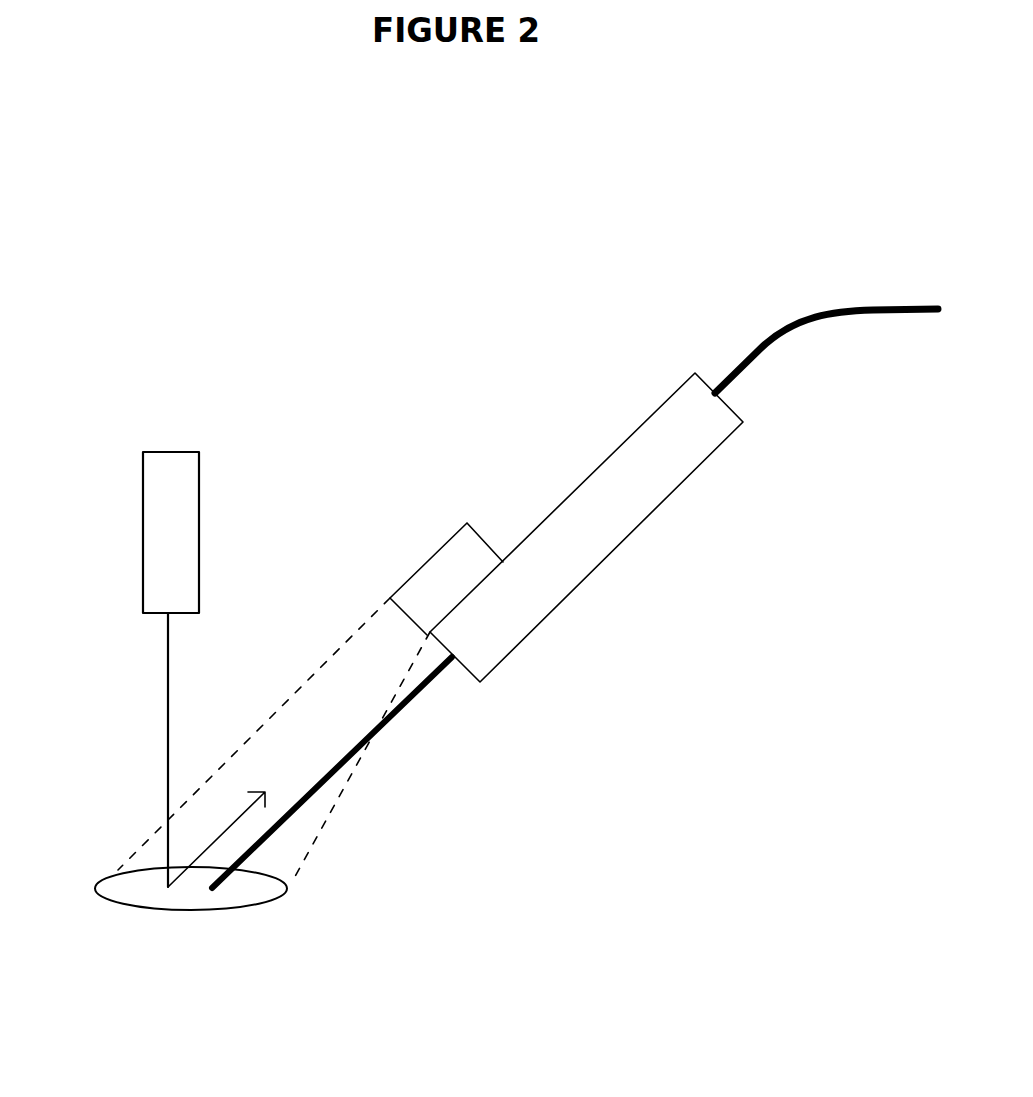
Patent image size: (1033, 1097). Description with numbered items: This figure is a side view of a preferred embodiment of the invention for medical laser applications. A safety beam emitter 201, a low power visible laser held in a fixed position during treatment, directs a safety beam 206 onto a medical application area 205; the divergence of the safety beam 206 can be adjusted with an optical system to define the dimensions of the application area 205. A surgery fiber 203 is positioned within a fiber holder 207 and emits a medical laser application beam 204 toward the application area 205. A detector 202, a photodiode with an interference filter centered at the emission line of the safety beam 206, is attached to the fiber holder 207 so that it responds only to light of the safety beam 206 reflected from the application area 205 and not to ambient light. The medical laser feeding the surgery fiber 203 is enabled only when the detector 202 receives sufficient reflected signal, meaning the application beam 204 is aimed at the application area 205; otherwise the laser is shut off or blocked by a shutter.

The safety beam emitter 201 is at (133, 532).
The detector 202 is at (423, 579).
The surgery fiber 203 is at (826, 351).
The medical laser application beam 204 is at (417, 712).
The medical application area 205 is at (128, 893).
The safety beam 206 is at (167, 780).
The fiber holder 207 is at (586, 527).